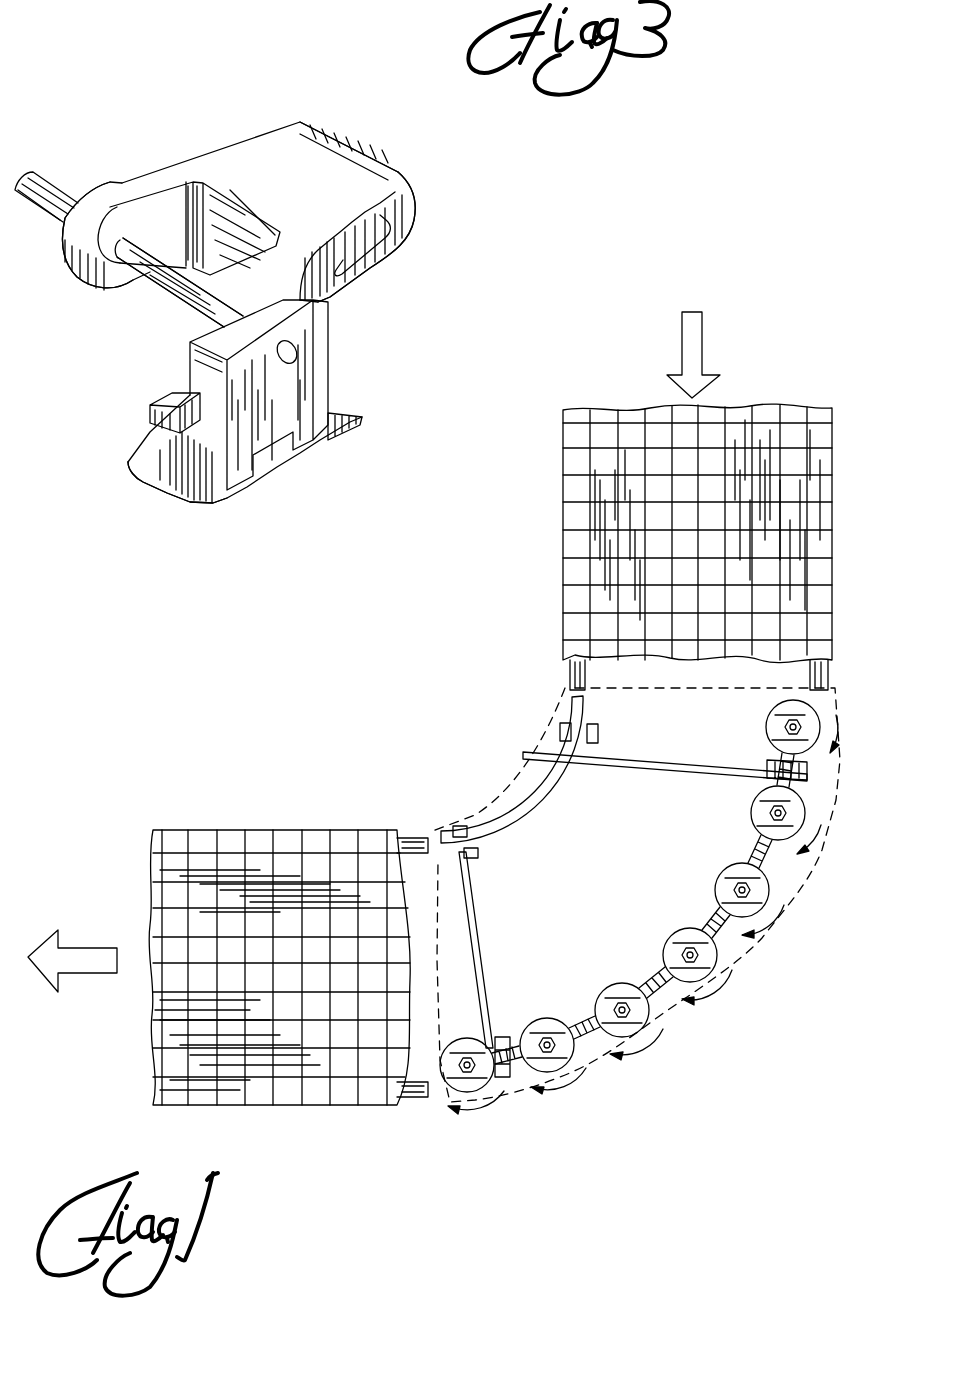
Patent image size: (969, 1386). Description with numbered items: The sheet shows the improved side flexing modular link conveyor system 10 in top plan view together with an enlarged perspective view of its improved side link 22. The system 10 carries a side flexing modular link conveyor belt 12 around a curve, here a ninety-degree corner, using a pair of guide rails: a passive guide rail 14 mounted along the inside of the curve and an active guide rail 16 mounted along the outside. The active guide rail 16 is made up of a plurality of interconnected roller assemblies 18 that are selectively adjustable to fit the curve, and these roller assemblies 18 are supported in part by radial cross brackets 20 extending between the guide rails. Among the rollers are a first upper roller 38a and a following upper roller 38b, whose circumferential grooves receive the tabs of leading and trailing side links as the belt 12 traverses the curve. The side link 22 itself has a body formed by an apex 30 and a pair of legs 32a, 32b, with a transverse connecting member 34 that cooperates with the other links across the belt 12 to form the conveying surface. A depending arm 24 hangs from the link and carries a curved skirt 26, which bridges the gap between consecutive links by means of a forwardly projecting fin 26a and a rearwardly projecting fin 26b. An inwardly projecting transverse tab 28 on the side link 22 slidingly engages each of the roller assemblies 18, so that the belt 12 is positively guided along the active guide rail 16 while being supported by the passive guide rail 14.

In FIG. 1, the side flexing modular link conveyor system 10 is at (475, 776).
In FIG. 1, the side flexing modular link conveyor belt 12 is at (577, 550).
In FIG. 1, the passive guide rail 14 is at (572, 677).
In FIG. 1, the active guide rail 16 is at (670, 934).
In FIG. 1, the roller assemblies 18 is at (555, 1087).
In FIG. 1, the radial cross brackets 20 is at (687, 768).
In FIG. 3, the side link 22 is at (335, 110).
In FIG. 3, the depending arm 24 is at (322, 392).
In FIG. 3, the curved skirt 26 is at (278, 473).
In FIG. 3, the forwardly projecting fin 26a is at (153, 477).
In FIG. 3, the rearwardly projecting fin 26b is at (360, 423).
In FIG. 3, the transverse tab 28 is at (150, 412).
In FIG. 3, the apex 30 is at (372, 165).
In FIG. 3, the leg 32a is at (72, 270).
In FIG. 3, the leg 32b is at (283, 300).
In FIG. 3, the transverse connecting member 34 is at (52, 193).
In FIG. 1, the first upper roller 38a is at (800, 826).
In FIG. 1, the following upper roller 38b is at (818, 732).